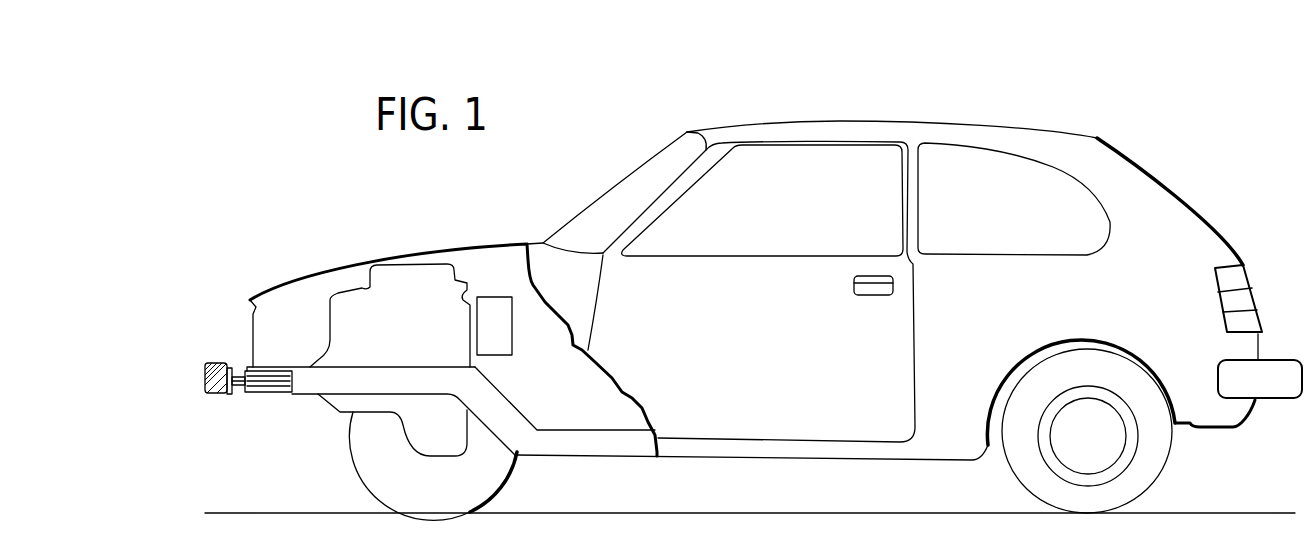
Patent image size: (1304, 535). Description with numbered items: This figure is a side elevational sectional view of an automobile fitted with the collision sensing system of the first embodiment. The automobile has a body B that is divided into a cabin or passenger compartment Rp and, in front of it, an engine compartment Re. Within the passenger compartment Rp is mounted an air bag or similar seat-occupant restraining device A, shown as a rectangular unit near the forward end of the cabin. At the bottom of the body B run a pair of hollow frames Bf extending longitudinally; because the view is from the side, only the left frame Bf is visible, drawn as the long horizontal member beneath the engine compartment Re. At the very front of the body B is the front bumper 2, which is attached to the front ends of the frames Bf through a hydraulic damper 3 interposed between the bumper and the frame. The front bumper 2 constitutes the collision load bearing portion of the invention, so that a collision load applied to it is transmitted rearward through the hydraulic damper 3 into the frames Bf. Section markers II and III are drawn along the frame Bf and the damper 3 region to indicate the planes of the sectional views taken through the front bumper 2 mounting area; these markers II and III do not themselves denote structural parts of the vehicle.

The body B is at (876, 117).
The seat-occupant restraining device A is at (498, 320).
The engine compartment Re is at (528, 275).
The passenger compartment Rp is at (596, 417).
The hollow frame Bf is at (432, 382).
The front bumper 2 is at (207, 380).
The hydraulic damper 3 is at (254, 378).
The section line II- II is at (153, 377).
The section line III- III is at (310, 445).